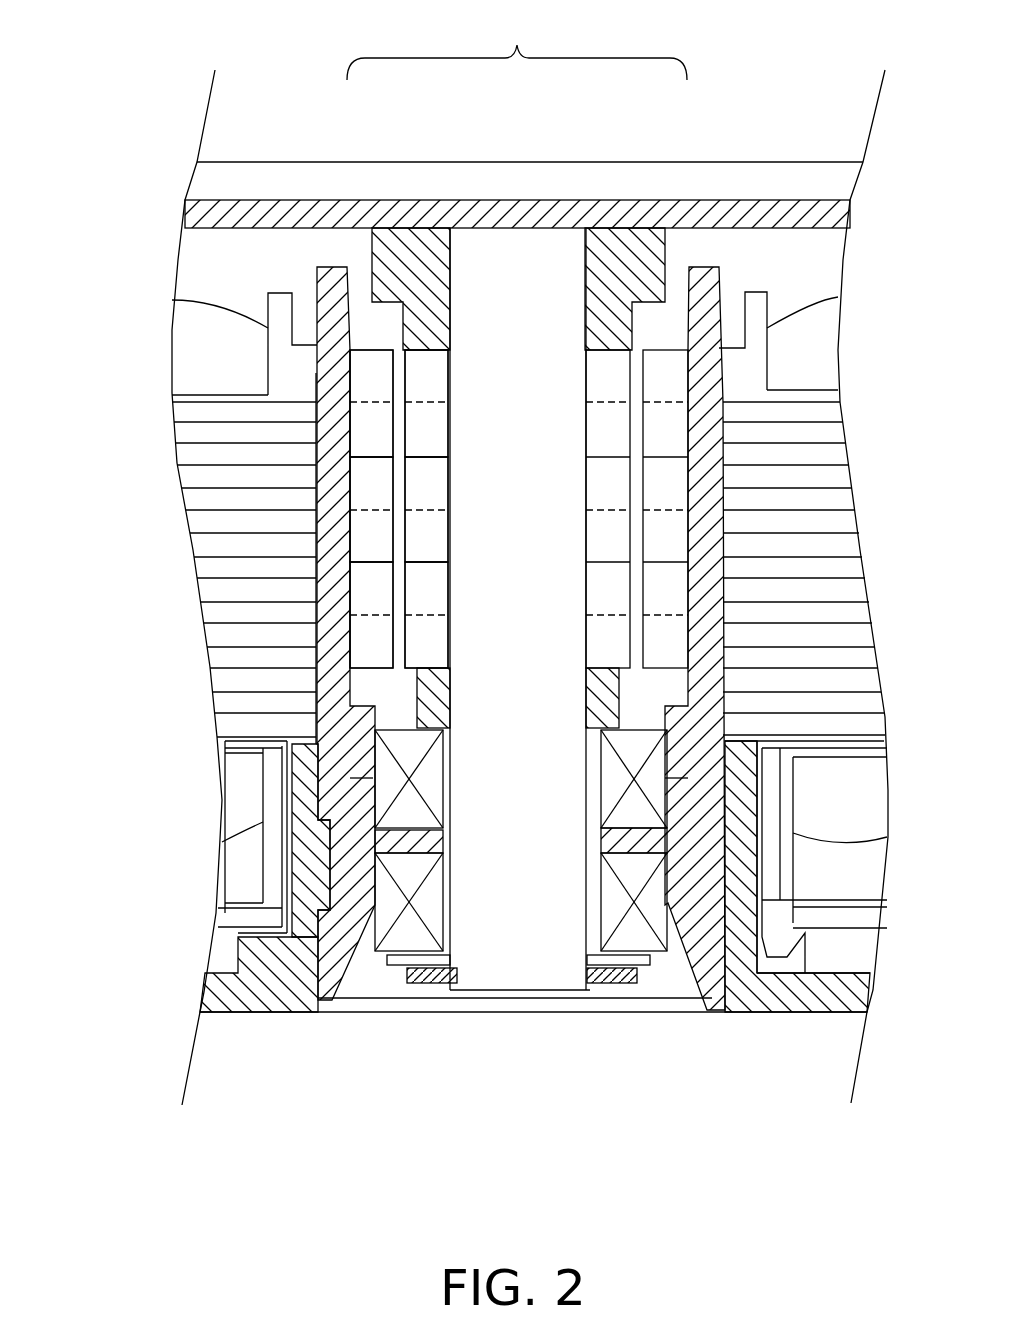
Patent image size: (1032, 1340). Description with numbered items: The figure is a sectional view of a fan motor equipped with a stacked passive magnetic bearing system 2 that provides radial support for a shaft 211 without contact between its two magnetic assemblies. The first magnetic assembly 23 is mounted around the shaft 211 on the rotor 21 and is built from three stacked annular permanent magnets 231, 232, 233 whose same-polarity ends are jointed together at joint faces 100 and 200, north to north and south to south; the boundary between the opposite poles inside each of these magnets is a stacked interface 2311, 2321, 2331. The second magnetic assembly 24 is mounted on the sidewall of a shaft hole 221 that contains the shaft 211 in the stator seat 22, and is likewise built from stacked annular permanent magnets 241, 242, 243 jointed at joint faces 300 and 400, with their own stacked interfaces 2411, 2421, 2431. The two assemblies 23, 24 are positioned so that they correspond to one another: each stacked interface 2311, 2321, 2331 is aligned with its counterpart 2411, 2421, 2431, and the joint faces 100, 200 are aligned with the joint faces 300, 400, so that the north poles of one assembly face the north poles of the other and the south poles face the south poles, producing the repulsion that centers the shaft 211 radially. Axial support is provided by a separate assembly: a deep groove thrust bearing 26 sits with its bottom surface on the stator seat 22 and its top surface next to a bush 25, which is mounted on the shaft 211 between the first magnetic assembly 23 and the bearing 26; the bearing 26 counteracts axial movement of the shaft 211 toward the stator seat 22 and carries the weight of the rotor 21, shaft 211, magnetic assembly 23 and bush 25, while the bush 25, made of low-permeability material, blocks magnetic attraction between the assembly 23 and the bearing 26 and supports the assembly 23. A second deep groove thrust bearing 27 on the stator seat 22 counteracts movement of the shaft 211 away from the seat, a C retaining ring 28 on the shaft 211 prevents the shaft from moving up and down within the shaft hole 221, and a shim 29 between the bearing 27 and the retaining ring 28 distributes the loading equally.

The magnetic bearing system 2 is at (517, 175).
The rotor 21 is at (750, 195).
The shaft 211 is at (517, 252).
The stator seat 22 is at (305, 964).
The shaft hole 221 is at (653, 703).
The first magnetic assembly 23 is at (517, 380).
The annular permanent magnet 231 is at (451, 378).
The stacked interface 2311 is at (450, 403).
The annular permanent magnet 232 is at (450, 488).
The stacked interface 2321 is at (450, 512).
The annular permanent magnet 233 is at (450, 582).
The stacked interface 2331 is at (450, 617).
The second magnetic assembly 24 is at (355, 380).
The annular permanent magnet 241 is at (350, 352).
The stacked interface 2411 is at (353, 405).
The annular permanent magnet 242 is at (353, 500).
The stacked interface 2421 is at (353, 510).
The annular permanent magnet 243 is at (353, 592).
The stacked interface 2431 is at (353, 614).
The bush 25 is at (405, 693).
The deep groove thrust bearing 26 is at (456, 781).
The deep groove thrust bearing 27 is at (443, 907).
The C retaining ring 28 is at (430, 983).
The shim 29 is at (386, 915).
The joint face 100 is at (450, 457).
The joint face 200 is at (450, 562).
The joint face 300 is at (353, 457).
The joint face 400 is at (353, 560).